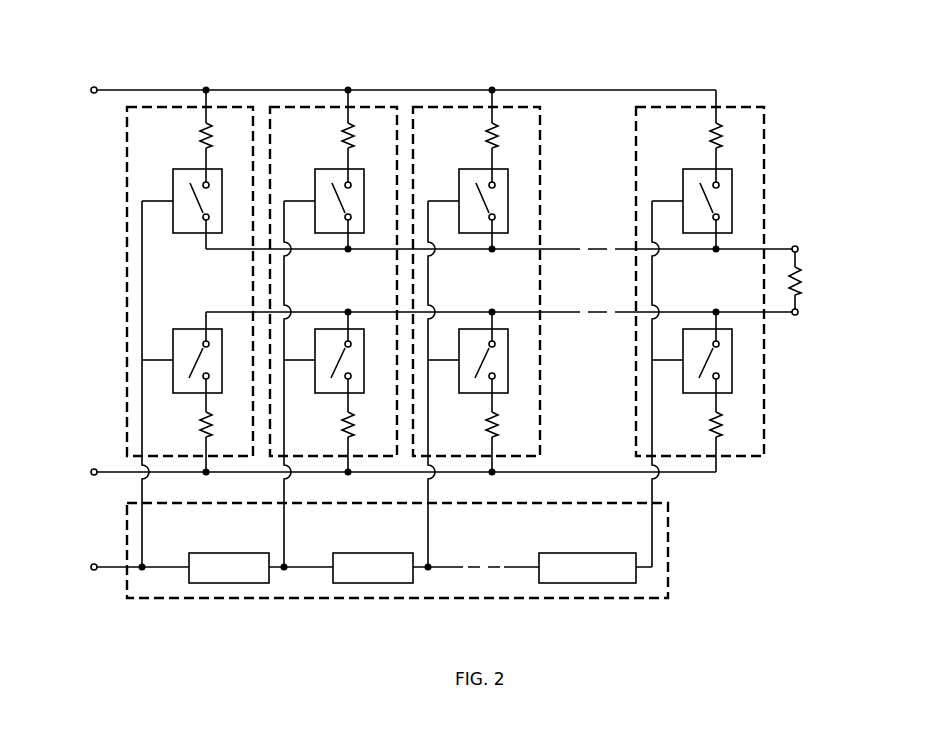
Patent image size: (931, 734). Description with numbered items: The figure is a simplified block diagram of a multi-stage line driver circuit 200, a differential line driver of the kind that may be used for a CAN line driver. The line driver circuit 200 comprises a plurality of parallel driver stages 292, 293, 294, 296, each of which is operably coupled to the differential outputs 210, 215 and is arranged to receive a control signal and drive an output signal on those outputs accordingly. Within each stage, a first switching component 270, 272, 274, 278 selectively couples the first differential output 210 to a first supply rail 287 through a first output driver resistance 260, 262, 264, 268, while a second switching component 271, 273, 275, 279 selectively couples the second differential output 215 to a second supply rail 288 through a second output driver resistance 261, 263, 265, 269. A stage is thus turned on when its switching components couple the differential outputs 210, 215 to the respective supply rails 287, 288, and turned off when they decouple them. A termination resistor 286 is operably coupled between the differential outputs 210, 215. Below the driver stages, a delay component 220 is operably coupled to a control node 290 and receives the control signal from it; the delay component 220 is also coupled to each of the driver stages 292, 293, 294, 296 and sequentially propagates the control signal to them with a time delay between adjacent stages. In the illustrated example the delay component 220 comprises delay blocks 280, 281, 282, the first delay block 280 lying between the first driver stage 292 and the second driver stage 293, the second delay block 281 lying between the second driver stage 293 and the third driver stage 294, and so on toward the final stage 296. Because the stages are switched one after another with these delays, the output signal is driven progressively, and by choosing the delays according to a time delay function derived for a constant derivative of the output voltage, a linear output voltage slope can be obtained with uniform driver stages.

The multi-stage line driver circuit 200 is at (764, 552).
The first differential output 210 is at (796, 245).
The second differential output 215 is at (796, 316).
The delay component 220 is at (667, 540).
The first output driver resistance 260 is at (201, 131).
The second output driver resistance 261 is at (201, 431).
The first output driver resistance 262 is at (343, 131).
The second output driver resistance 263 is at (343, 431).
The first output driver resistance 264 is at (487, 131).
The second output driver resistance 265 is at (487, 431).
The first output driver resistance 268 is at (711, 131).
The second output driver resistance 269 is at (711, 431).
The first switching component 270 is at (173, 176).
The second switching component 271 is at (190, 394).
The first switching component 272 is at (315, 176).
The second switching component 273 is at (332, 394).
The first switching component 274 is at (459, 176).
The second switching component 275 is at (476, 394).
The first switching component 278 is at (683, 176).
The second switching component 279 is at (700, 394).
The first delay block 280 is at (205, 553).
The second delay block 281 is at (349, 553).
The delay block 282 is at (557, 553).
The termination resistor 286 is at (802, 282).
The first supply rail 287 is at (91, 87).
The second supply rail 288 is at (91, 469).
The control node 290 is at (91, 564).
The first driver stage 292 is at (205, 288).
The second driver stage 293 is at (347, 288).
The third driver stage 294 is at (491, 288).
The driver stage 296 is at (715, 288).